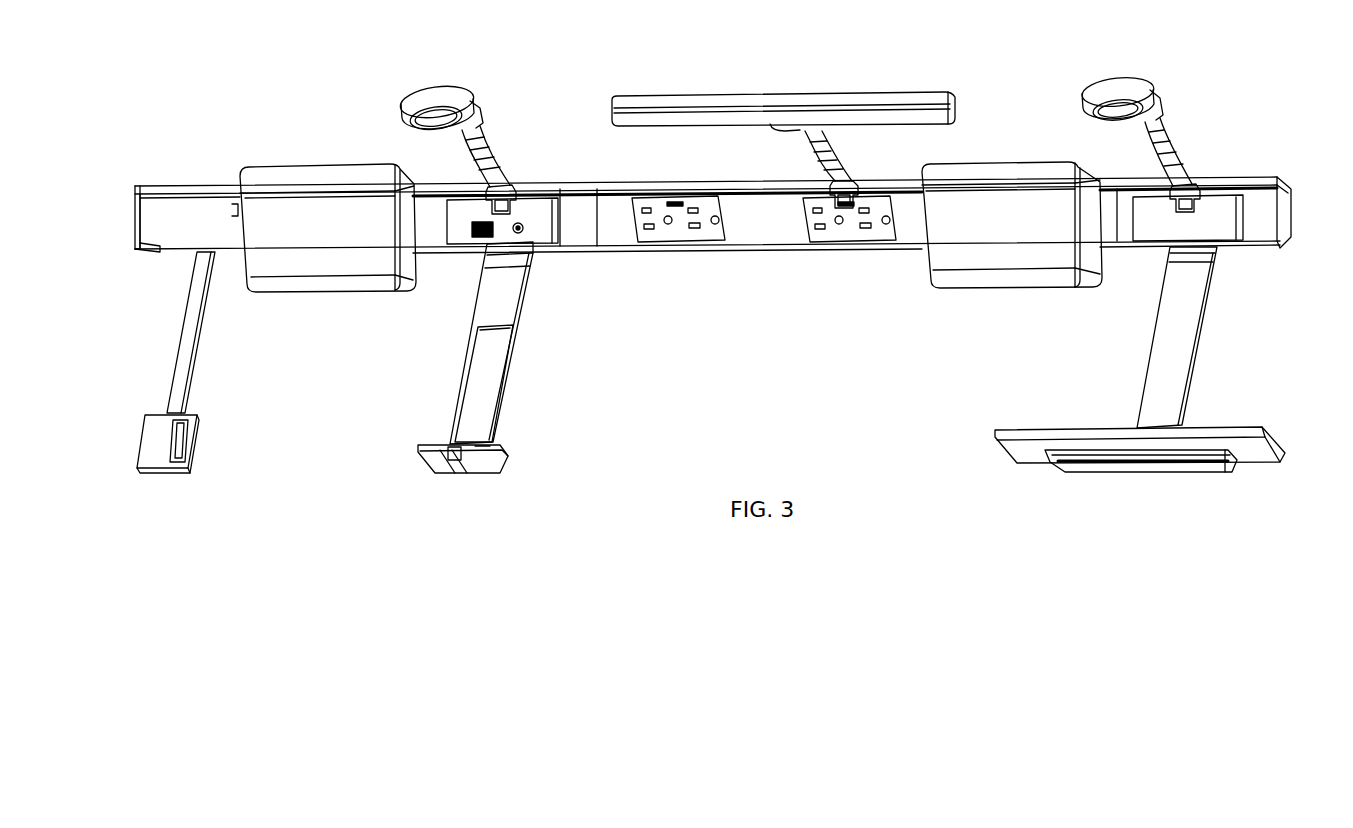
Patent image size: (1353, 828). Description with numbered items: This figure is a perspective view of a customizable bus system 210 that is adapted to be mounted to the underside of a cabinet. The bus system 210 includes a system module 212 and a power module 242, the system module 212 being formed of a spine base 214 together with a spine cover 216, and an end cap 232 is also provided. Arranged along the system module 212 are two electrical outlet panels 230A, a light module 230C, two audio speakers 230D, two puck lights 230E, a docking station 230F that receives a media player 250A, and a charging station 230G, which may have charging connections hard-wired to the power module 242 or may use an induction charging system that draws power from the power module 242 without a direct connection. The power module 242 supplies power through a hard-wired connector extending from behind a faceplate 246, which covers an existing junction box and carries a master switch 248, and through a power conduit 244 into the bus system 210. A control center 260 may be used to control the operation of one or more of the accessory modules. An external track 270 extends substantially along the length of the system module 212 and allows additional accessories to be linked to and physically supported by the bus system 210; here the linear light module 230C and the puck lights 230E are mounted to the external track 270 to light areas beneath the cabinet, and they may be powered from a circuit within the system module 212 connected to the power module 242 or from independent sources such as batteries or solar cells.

The bus system 210 is at (563, 72).
The system module 212 is at (548, 158).
The spine base 214 is at (1278, 181).
The spine cover 216 is at (764, 233).
The end cap 232 is at (1285, 212).
The control center 260 is at (183, 210).
The external track 270 is at (460, 244).
The electrical outlet panel 230A is at (671, 228).
The light module 230C is at (695, 106).
The audio speaker 230D is at (315, 258).
The puck light 230E is at (440, 88).
The docking station 230F is at (508, 378).
The charging station 230G is at (1105, 475).
The media player 250A is at (475, 392).
The power module 242 is at (150, 357).
The power conduit 244 is at (196, 322).
The faceplate 246 is at (150, 441).
The master switch 248 is at (185, 450).